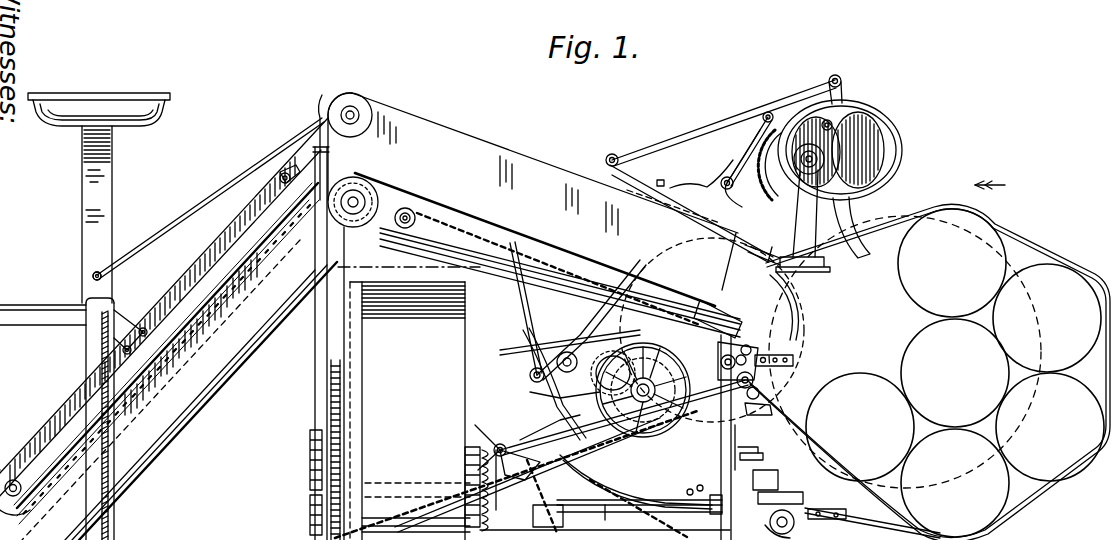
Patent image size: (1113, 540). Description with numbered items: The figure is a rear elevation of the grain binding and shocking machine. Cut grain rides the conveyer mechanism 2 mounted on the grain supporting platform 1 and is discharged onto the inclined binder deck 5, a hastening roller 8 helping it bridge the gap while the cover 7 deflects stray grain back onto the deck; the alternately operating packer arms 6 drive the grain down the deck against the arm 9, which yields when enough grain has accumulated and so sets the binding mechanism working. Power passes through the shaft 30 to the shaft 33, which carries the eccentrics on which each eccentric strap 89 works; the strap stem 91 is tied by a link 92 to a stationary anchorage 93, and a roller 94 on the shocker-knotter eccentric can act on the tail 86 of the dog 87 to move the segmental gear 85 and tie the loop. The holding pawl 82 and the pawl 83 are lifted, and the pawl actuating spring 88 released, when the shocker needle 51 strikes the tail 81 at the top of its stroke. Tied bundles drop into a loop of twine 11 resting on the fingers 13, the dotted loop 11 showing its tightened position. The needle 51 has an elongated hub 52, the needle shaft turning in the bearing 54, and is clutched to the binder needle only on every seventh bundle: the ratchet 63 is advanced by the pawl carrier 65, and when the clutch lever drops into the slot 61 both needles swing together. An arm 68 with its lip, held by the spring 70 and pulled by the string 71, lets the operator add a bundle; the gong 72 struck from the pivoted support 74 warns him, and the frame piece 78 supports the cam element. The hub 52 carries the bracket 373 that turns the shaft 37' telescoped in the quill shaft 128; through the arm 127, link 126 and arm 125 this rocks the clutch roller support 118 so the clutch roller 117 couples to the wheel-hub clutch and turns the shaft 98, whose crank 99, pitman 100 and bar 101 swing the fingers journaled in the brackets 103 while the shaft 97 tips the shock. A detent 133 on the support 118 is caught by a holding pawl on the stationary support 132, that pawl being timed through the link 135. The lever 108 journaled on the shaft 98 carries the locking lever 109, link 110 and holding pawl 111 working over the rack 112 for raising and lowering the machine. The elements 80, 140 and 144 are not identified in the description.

The grain supporting platform 1 is at (440, 248).
The conveyer mechanism 2 is at (999, 186).
The inclined binder deck 5 is at (275, 345).
The packer arms 6 is at (668, 266).
The cover 7 is at (470, 142).
The hastening roller 8 is at (398, 230).
The arm (compressor) 9 is at (792, 330).
The loop of twine or string 11 is at (486, 348).
The fingers (outsetting arms) 13 is at (1060, 500).
The shaft 30 is at (890, 126).
The shaft 33 is at (864, 116).
The shaft 37' is at (782, 348).
The needle (shocker needle) 51 is at (525, 348).
The elongated hub 52 is at (571, 456).
The bearing 54 is at (740, 322).
The slot 61 is at (158, 383).
The ratchet 63 is at (555, 418).
The pawl carrier 65 is at (690, 305).
The arm 68 is at (772, 407).
The spring 70 is at (860, 204).
The string 71 is at (755, 380).
The gong 72 is at (760, 393).
The pivoted support 74 is at (570, 408).
The frame piece 78 is at (735, 405).
The arm 80 is at (846, 209).
The tail 81 is at (705, 186).
The holding pawl 82 is at (738, 170).
The pawl 83 is at (750, 118).
The segmental gear 85 is at (752, 150).
The tail (dog tail) 86 is at (530, 380).
The pawl (dog) 87 is at (674, 482).
The pawl actuating spring 88 is at (683, 473).
The eccentric strap 89 is at (898, 148).
The stem 91 is at (843, 84).
The link 92 is at (716, 128).
The stationary anchorage 93 is at (612, 154).
The roller 94 is at (845, 124).
The shaft 97 is at (800, 530).
The shaft 98 is at (607, 499).
The crank 99 is at (740, 497).
The pitman 100 is at (749, 445).
The bar (slide) 101 is at (757, 442).
The brackets 103 is at (778, 476).
The lever 108 is at (318, 503).
The locking lever 109 is at (300, 172).
The link 110 is at (315, 393).
The holding pawl 111 is at (318, 438).
The rack 112 is at (318, 480).
The clutch roller 117 is at (520, 444).
The clutch roller support 118 is at (605, 529).
The arm 125 is at (498, 480).
The link 126 is at (484, 439).
The arm 127 is at (746, 345).
The quill shaft 128 is at (712, 348).
The stationary support 132 is at (496, 495).
The detent 133 is at (540, 462).
The link 135 is at (498, 460).
The bracket 140 is at (803, 496).
The rod 144 is at (826, 510).
The bracket 373 is at (575, 352).